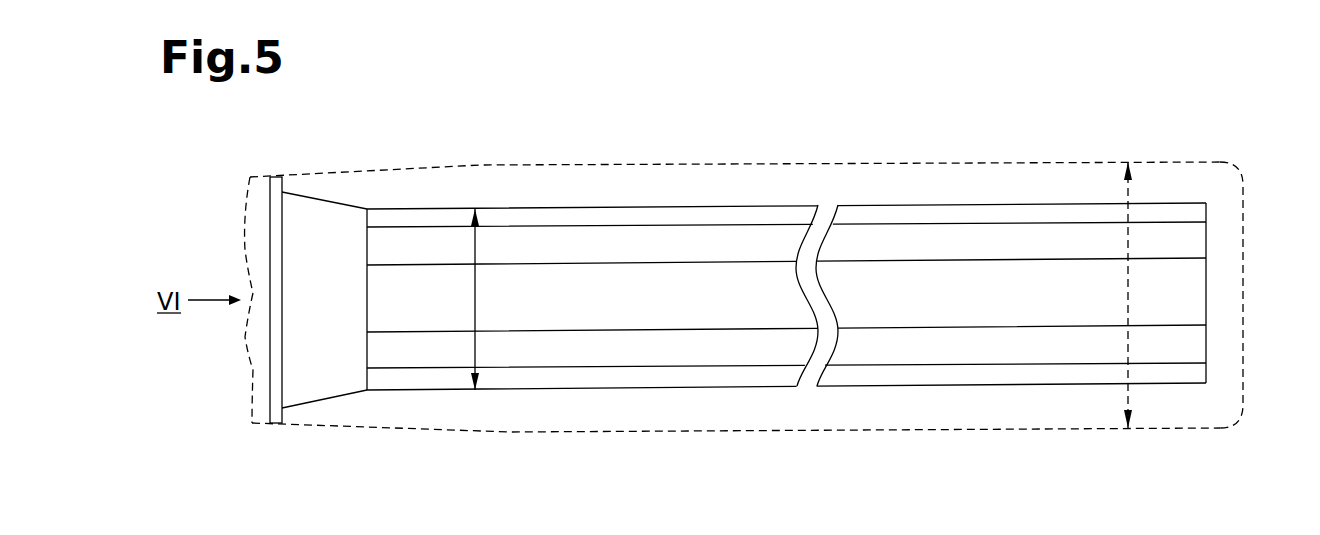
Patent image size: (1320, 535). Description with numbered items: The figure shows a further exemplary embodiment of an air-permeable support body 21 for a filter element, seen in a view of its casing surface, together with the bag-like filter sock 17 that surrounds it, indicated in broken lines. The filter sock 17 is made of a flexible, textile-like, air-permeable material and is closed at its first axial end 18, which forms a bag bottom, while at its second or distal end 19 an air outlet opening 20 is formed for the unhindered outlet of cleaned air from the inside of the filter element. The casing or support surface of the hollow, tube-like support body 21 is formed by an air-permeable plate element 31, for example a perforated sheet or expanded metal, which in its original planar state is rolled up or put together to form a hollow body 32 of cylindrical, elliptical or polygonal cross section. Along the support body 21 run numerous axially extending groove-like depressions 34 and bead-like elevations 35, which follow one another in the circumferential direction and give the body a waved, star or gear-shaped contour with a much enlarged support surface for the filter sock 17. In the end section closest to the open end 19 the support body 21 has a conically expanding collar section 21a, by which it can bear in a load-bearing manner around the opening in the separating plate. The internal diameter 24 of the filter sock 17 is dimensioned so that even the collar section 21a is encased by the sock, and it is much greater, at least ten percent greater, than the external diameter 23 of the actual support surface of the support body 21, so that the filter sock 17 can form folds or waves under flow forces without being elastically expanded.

The filter sock 17 is at (822, 163).
The first axial end 18 is at (1248, 150).
The second end 19 is at (230, 163).
The air outlet opening 20 is at (235, 428).
The support body 21 is at (738, 185).
The collar section 21a is at (330, 186).
The external diameter 23 is at (485, 306).
The internal diameter 24 is at (1139, 301).
The plate element 31 is at (605, 293).
The hollow body 32 is at (940, 195).
The depressions 34 is at (743, 365).
The elevations 35 is at (685, 390).